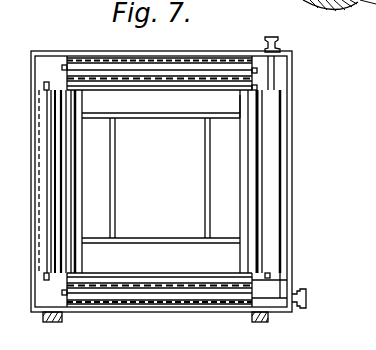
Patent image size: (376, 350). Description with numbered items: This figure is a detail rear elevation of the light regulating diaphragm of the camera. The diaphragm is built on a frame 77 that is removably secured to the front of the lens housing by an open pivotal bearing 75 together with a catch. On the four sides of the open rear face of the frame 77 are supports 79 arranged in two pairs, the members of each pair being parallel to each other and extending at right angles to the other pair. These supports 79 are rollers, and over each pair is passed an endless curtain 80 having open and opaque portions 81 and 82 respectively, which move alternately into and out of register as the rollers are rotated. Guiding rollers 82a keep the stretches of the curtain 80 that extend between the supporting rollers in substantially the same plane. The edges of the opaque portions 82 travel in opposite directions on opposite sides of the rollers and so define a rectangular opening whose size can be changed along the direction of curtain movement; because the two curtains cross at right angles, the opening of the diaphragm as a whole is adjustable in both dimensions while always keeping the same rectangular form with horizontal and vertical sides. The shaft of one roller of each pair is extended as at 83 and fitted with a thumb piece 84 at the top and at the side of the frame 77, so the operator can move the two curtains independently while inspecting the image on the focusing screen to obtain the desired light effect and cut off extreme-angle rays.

The open pivotal bearing 75 is at (50, 322).
The frame 77 is at (292, 192).
The supports 79 is at (205, 67).
The endless curtain 80 is at (150, 120).
The open portion 81 is at (160, 178).
The opaque portion 82 is at (220, 106).
The guiding rollers 82a is at (179, 281).
The extended shafts 83 is at (277, 78).
The thumb pieces 84 is at (282, 36).